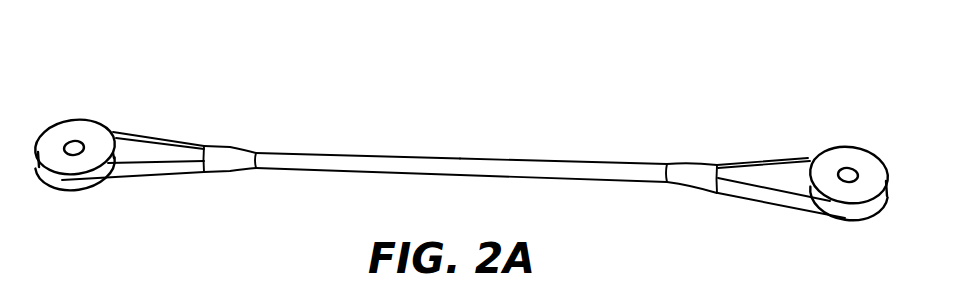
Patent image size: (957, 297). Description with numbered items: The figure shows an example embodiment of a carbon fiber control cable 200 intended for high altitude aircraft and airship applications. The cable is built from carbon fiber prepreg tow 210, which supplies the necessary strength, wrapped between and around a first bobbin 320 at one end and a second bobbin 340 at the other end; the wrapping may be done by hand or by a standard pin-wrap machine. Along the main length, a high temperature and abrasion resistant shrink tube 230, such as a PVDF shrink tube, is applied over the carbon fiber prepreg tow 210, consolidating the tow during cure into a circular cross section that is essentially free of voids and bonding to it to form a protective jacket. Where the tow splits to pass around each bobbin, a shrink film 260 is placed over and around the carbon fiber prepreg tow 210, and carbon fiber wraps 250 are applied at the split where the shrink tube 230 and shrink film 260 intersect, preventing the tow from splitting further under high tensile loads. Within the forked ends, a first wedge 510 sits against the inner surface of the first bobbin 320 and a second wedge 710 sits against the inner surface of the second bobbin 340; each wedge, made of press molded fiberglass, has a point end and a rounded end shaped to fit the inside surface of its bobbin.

The carbon fiber control cable 200 is at (703, 96).
The carbon fiber prepreg tow 210 is at (390, 157).
The shrink tube 230 is at (552, 160).
The carbon fiber wraps 250 is at (226, 173).
The shrink film 260 is at (145, 168).
The first bobbin 320 is at (75, 131).
The second bobbin 340 is at (843, 160).
The first wedge 510 is at (140, 149).
The second wedge 710 is at (763, 173).